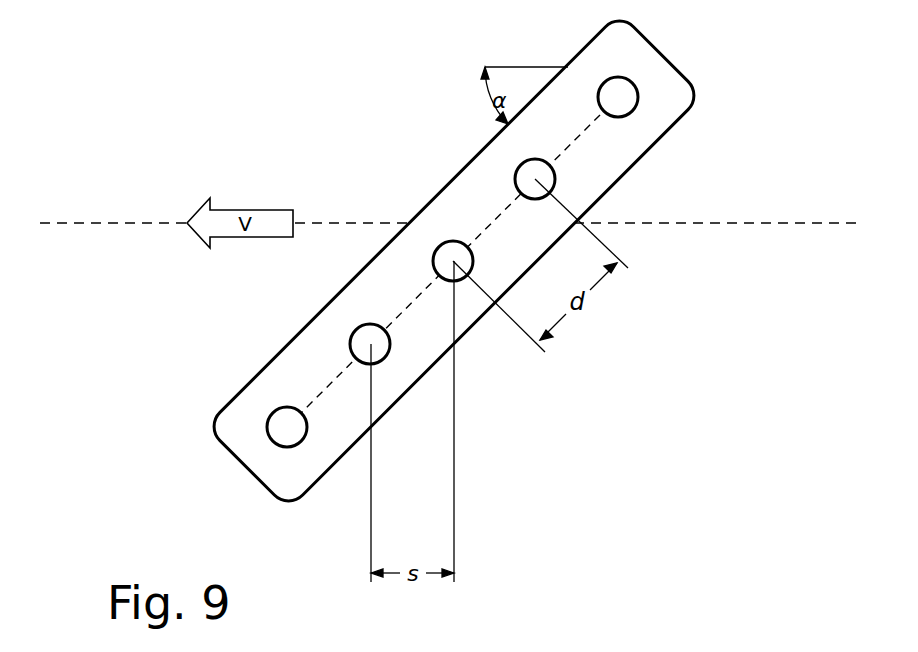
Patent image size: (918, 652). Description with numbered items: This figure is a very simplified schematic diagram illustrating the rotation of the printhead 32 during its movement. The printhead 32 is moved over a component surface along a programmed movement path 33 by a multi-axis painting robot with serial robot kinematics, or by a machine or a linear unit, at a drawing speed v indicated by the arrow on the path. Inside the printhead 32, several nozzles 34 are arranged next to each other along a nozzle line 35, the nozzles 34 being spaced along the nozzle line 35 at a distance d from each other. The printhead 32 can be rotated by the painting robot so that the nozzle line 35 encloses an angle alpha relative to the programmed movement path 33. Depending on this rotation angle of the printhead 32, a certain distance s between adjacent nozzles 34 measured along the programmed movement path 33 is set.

The printhead 32 is at (650, 155).
The programmed movement path 33 is at (117, 222).
The nozzle 34 is at (270, 418).
The nozzle line 35 is at (500, 213).